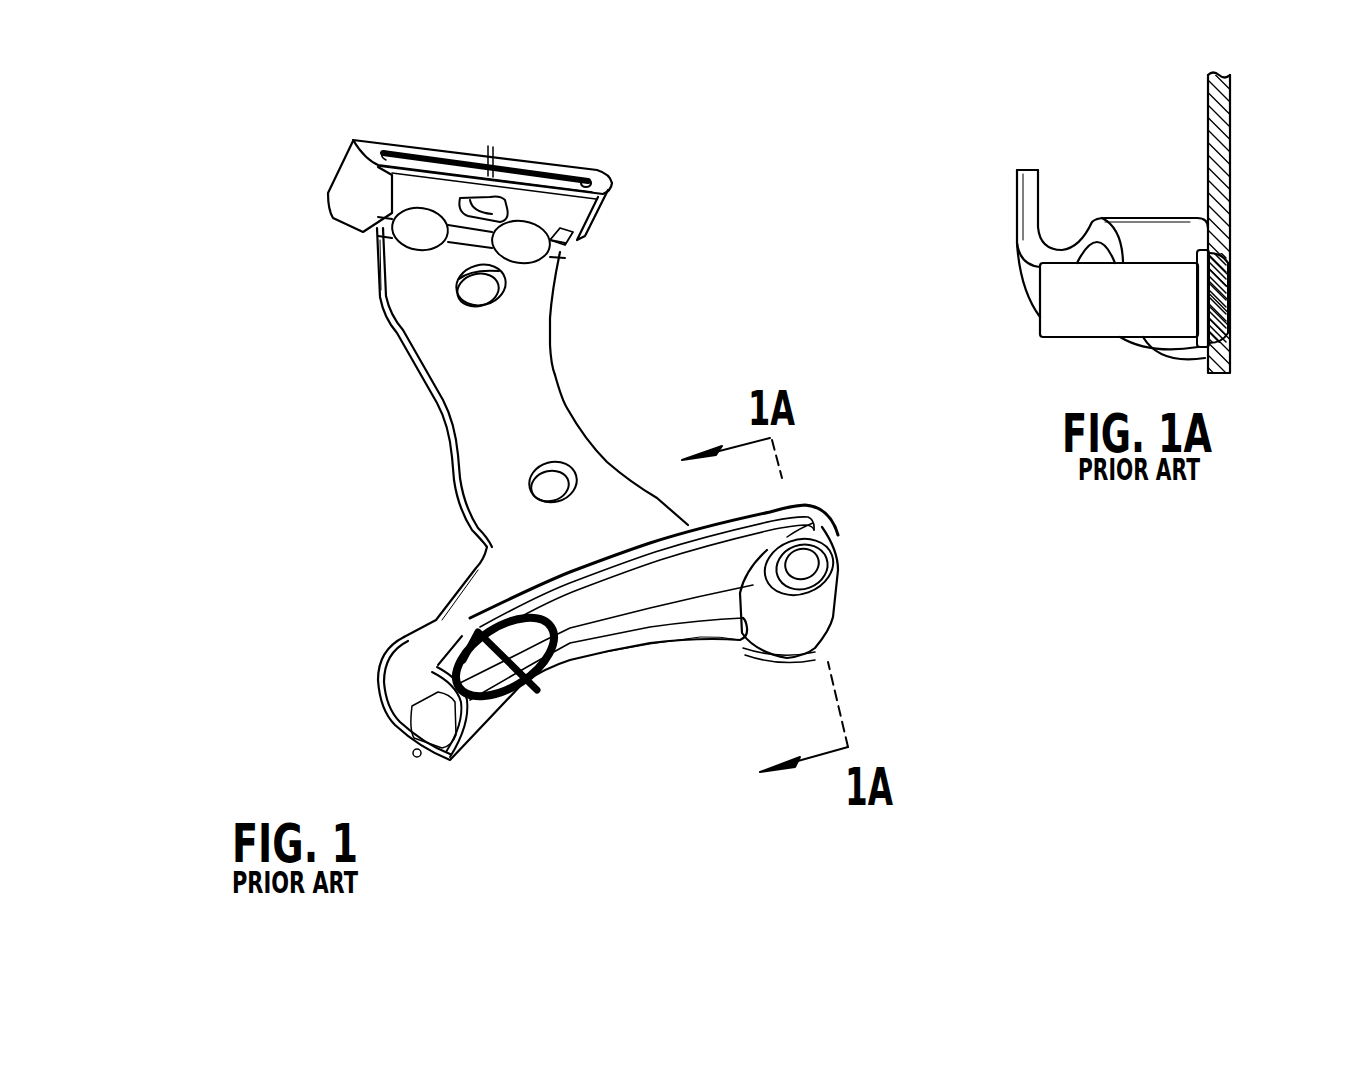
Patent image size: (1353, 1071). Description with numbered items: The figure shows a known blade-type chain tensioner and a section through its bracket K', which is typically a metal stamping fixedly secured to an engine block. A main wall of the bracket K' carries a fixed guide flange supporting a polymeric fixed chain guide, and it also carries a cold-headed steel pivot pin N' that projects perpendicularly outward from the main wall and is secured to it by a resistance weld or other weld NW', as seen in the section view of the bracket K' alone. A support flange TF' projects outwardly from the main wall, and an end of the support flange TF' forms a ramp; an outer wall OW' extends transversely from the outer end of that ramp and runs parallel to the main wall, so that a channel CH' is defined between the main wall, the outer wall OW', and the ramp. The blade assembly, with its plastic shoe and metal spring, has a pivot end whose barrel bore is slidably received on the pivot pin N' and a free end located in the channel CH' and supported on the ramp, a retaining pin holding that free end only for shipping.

The bracket K' is at (1256, 222).
The outer wall OW' is at (975, 183).
The support flange TF' is at (1147, 190).
The pivot pin N' is at (1093, 329).
The channel CH' is at (1112, 195).
The weld NW' is at (1260, 279).